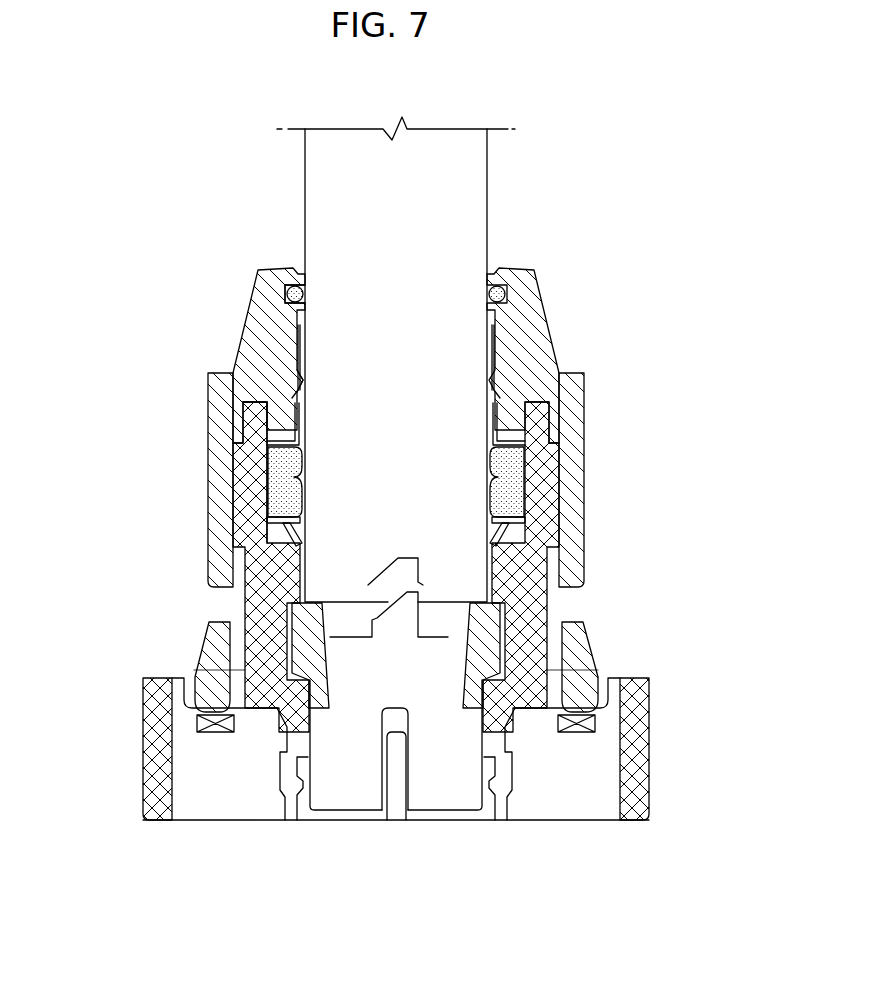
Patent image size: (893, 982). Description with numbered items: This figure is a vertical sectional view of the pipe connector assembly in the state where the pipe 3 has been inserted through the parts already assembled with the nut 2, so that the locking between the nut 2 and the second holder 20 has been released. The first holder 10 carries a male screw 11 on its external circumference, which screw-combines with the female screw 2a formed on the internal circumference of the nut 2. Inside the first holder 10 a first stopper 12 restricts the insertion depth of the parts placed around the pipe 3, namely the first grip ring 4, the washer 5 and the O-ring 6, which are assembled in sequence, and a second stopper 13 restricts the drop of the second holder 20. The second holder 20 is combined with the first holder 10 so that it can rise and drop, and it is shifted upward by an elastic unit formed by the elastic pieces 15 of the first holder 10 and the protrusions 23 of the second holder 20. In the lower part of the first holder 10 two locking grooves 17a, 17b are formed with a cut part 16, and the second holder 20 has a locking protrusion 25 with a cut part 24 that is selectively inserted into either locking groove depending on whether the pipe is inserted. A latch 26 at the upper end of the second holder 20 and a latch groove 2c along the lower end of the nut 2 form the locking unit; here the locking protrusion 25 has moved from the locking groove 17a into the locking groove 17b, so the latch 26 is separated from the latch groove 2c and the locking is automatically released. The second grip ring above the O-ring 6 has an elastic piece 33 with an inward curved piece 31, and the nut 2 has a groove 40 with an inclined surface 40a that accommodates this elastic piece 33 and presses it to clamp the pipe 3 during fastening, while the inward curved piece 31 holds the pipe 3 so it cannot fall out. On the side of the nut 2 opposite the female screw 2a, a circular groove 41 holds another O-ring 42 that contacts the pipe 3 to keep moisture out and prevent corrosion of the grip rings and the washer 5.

The pipe 3 is at (475, 199).
The groove 40 is at (290, 387).
The inclined surface 40a is at (293, 372).
The circular groove 41 is at (280, 290).
The O-ring 42 is at (284, 302).
The inward curved piece 31 is at (567, 368).
The elastic piece 33 is at (522, 362).
The nut 2 is at (210, 412).
The female screw 2a is at (585, 397).
The latch groove 2c is at (403, 567).
The first grip ring 4 is at (204, 567).
The washer 5 is at (553, 480).
The O-ring 6 is at (272, 470).
The male screw 11 is at (247, 497).
The first stopper 12 is at (550, 508).
The second stopper 13 is at (508, 646).
The elastic pieces 15 is at (215, 740).
The cut part 16 is at (398, 812).
The locking groove 17a is at (327, 790).
The locking groove 17b is at (312, 772).
The second holder 20 is at (372, 745).
The protrusions 23 is at (205, 664).
The cut part 24 is at (410, 725).
The locking protrusion 25 is at (478, 797).
The latch 26 is at (422, 622).
The first holder 10 is at (336, 805).